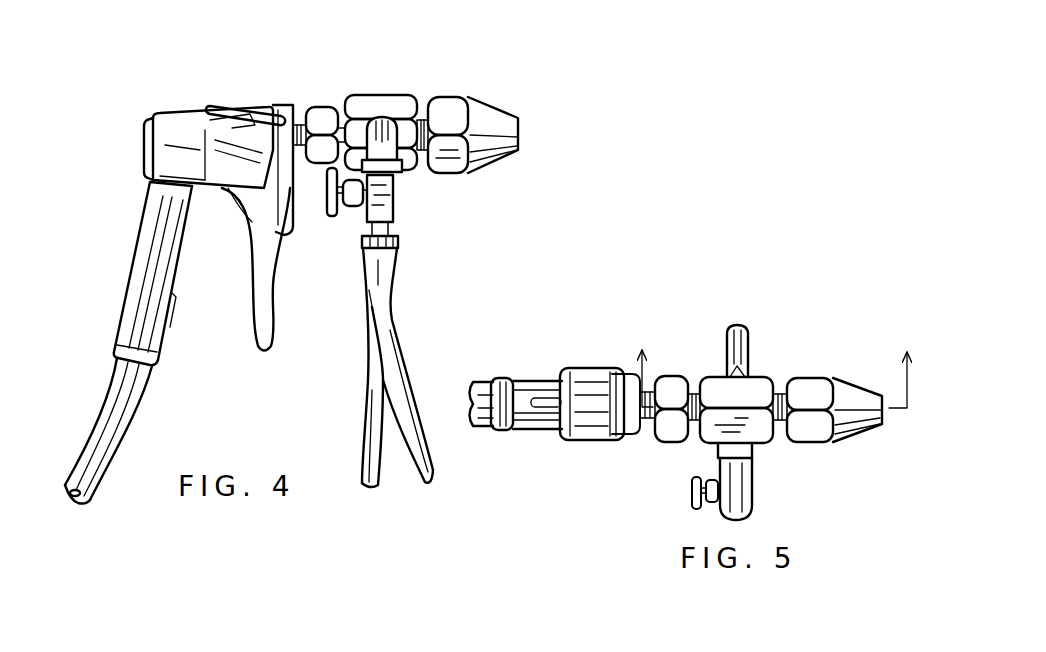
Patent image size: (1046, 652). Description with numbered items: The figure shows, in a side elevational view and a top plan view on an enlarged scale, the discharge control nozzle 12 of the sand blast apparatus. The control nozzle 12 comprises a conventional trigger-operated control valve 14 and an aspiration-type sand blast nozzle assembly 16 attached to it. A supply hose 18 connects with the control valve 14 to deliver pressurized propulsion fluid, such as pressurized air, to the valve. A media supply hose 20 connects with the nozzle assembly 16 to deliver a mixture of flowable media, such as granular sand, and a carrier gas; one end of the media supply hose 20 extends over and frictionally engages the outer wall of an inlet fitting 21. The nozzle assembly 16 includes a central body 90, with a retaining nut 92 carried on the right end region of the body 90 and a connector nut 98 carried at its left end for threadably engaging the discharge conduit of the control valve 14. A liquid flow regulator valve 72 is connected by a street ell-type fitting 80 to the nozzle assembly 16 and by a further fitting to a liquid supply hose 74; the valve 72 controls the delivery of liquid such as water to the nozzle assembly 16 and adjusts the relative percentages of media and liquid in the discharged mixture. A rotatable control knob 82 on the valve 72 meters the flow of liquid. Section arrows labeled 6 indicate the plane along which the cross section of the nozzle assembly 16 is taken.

In FIG. 4, the discharge control nozzle 12 is at (310, 52).
In FIG. 5, the discharge control nozzle 12 is at (607, 480).
In FIG. 4, the trigger-operated control valve 14 is at (209, 100).
In FIG. 5, the trigger-operated control valve 14 is at (540, 440).
In FIG. 4, the sand blast nozzle assembly 16 is at (437, 93).
In FIG. 5, the sand blast nozzle assembly 16 is at (790, 368).
In FIG. 4, the supply hose 18 is at (107, 410).
In FIG. 4, the media supply hose 20 is at (372, 402).
In FIG. 5, the inlet fitting 21 is at (738, 343).
In FIG. 4, the liquid flow regulator valve 72 is at (391, 206).
In FIG. 5, the liquid flow regulator valve 72 is at (710, 501).
In FIG. 4, the liquid supply hose 74 is at (388, 313).
In FIG. 4, the street ell-type fitting 80 is at (377, 120).
In FIG. 5, the street ell-type fitting 80 is at (743, 488).
In FIG. 4, the rotatable control knob 82 is at (323, 208).
In FIG. 5, the rotatable control knob 82 is at (692, 487).
In FIG. 4, the central body 90 is at (360, 102).
In FIG. 4, the retaining nut 92 is at (477, 101).
In FIG. 4, the connector nut 98 is at (317, 112).
In FIG. 5, the section line 6 is at (773, 363).